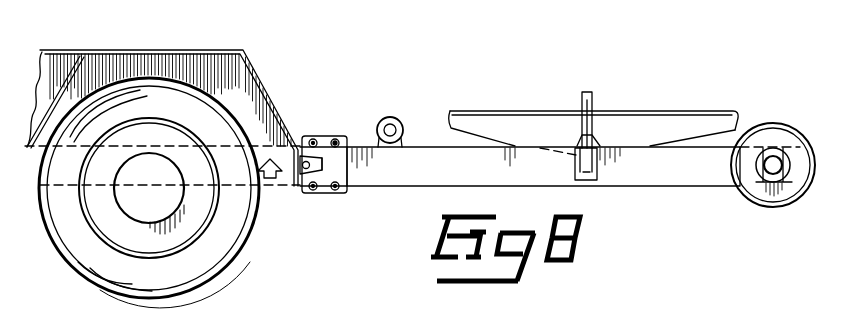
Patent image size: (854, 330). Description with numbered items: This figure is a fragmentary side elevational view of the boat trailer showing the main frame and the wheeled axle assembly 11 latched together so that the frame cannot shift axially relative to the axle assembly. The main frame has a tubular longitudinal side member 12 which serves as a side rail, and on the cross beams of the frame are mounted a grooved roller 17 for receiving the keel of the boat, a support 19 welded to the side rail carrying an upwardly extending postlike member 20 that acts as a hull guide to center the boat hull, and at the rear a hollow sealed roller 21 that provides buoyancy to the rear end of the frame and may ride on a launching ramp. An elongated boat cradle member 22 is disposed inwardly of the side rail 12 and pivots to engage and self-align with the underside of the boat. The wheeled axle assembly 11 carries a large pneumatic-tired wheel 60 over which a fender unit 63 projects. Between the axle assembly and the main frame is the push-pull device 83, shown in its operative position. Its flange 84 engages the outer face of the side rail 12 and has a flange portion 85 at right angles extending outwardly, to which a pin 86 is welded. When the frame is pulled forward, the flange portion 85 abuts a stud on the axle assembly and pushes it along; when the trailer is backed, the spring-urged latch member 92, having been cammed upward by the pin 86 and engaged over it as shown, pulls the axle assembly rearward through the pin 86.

The wheeled axle assembly 11 is at (248, 258).
The tubular longitudinal side member 12 is at (688, 177).
The grooved roller 17 is at (400, 118).
The support 19 is at (590, 180).
The postlike member 20 is at (584, 106).
The hollow sealed roller 21 is at (782, 140).
The boat cradle member 22 is at (672, 125).
The wheel 60 is at (122, 298).
The fender unit 63 is at (247, 82).
The push-pull device 83 is at (318, 130).
The flange 84 is at (340, 168).
The flange portion 85 is at (302, 192).
The pin 86 is at (300, 166).
The latch member 92 is at (318, 172).